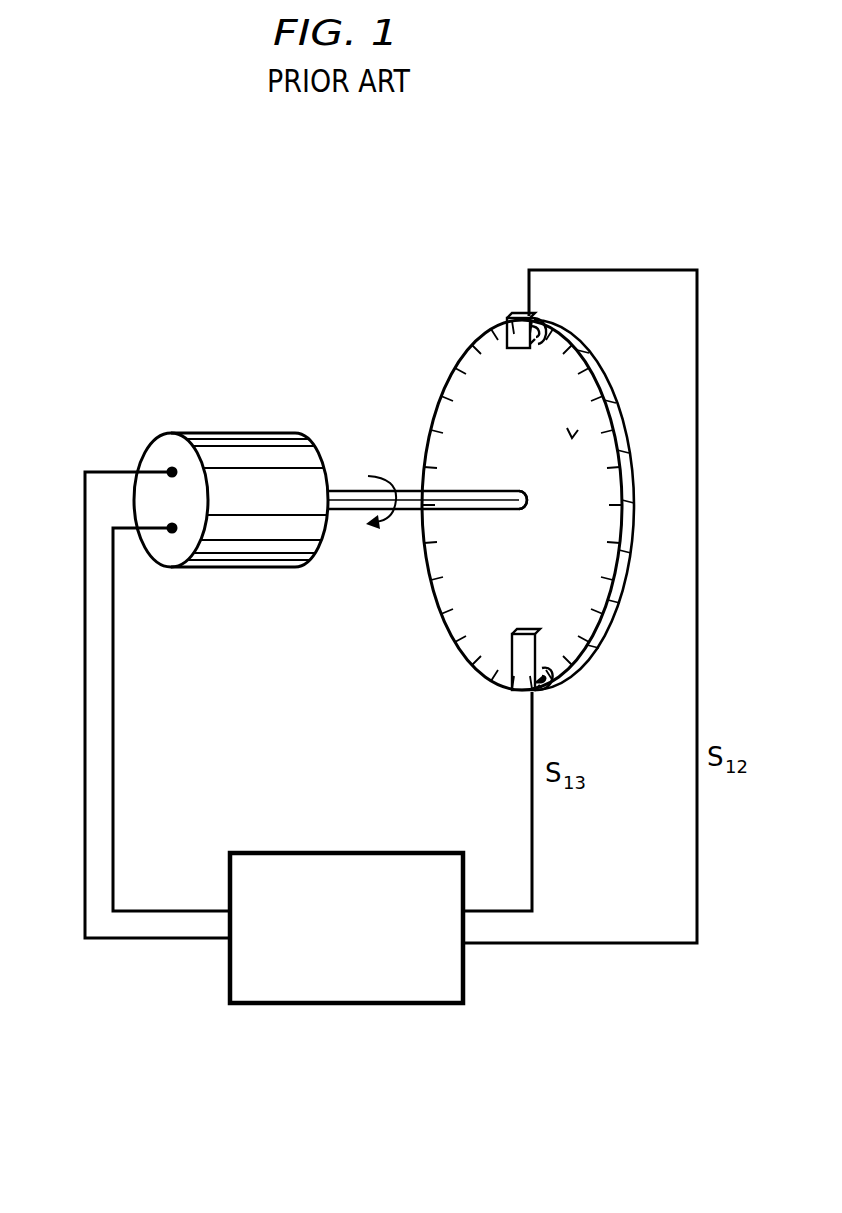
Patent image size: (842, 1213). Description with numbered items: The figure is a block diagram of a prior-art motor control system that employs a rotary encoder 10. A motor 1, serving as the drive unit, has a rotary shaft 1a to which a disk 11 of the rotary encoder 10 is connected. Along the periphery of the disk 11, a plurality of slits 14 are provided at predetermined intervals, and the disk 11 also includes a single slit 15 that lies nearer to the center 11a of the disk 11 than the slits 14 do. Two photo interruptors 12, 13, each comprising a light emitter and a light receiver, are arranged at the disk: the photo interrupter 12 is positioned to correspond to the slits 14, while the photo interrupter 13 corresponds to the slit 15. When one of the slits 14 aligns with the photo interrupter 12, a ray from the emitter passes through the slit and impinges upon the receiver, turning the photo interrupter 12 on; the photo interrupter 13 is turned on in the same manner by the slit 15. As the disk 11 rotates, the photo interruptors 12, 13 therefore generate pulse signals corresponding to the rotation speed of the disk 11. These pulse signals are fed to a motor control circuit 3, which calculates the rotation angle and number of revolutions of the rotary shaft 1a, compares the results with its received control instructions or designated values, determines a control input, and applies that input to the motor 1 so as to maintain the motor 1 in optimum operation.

The motor 1 is at (238, 460).
The rotary shaft 1a is at (343, 490).
The motor control circuit 3 is at (385, 992).
The rotary encoder 10 is at (535, 243).
The disk 11 is at (452, 393).
The center 11a is at (520, 488).
The photo interrupter 12 is at (508, 318).
The photo interrupter 13 is at (513, 688).
The slits 14 is at (447, 587).
The slit 15 is at (568, 425).